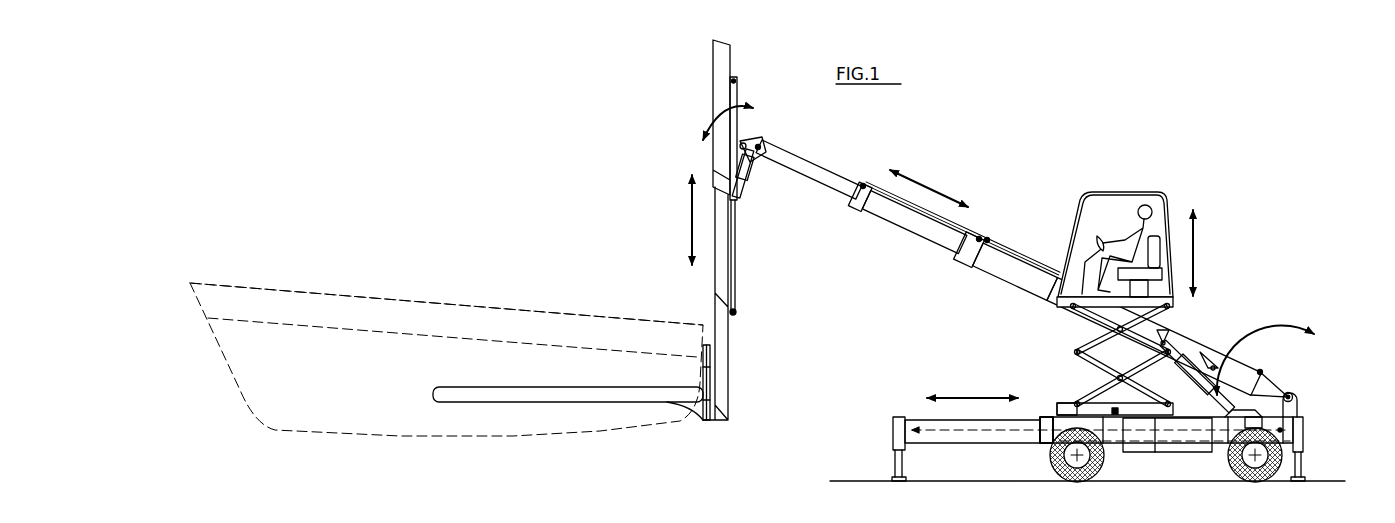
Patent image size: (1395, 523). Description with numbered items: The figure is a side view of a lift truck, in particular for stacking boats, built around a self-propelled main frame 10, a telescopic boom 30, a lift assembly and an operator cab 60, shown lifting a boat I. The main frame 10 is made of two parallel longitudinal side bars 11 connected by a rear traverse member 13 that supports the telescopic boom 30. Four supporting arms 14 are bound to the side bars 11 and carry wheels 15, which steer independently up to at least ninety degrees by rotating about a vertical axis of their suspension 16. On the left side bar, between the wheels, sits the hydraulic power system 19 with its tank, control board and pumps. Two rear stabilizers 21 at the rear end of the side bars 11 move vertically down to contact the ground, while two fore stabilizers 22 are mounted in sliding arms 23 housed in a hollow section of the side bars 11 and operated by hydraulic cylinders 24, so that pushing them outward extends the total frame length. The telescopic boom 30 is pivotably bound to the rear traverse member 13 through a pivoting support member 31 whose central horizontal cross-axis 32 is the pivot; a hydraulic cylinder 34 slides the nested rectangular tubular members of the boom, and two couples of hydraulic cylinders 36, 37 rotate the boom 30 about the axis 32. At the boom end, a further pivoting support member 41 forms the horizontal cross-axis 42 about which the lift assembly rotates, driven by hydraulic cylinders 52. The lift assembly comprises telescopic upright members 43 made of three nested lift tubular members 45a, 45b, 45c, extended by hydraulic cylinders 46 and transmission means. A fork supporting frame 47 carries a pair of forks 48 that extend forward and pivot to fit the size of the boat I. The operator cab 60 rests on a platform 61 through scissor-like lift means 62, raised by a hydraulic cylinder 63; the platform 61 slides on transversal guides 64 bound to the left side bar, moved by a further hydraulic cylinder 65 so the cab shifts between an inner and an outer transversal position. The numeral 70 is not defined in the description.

The boat I is at (417, 312).
The self-propelled main frame 10 is at (1003, 353).
The longitudinal side bars 11 is at (1225, 443).
The rear traverse member 13 is at (1300, 415).
The supporting arms 14 is at (1057, 410).
The wheels 15 is at (1053, 467).
The suspension 16 is at (1040, 440).
The hydraulic power system 19 is at (1188, 448).
The rear stabilizers 21 is at (1305, 468).
The fore stabilizers 22 is at (893, 458).
The sliding arms 23 is at (937, 422).
The hydraulic cylinders 24 is at (965, 432).
The telescopic boom 30 is at (928, 143).
The pivoting support member 31 is at (1297, 405).
The horizontal cross-axis 32 is at (1288, 391).
The hydraulic cylinder 34 is at (1172, 327).
The hydraulic cylinders 36 is at (1212, 387).
The hydraulic cylinders 37 is at (1240, 390).
The further pivoting support member 41 is at (745, 143).
The horizontal cross-axis 42 is at (740, 152).
The telescopic upright members 43 is at (720, 57).
The lift tubular member 45a is at (733, 90).
The lift tubular member 45b is at (717, 273).
The lift tubular member 45c is at (723, 340).
The hydraulic cylinders 46 is at (736, 295).
The fork supporting frame 47 is at (702, 423).
The forks 48 is at (455, 393).
The hydraulic cylinders 52 is at (759, 153).
The operator cab 60 is at (1170, 170).
The platform 61 is at (1067, 405).
The scissor-like lift means 62 is at (1077, 353).
The hydraulic cylinder 63 is at (1140, 376).
The transversal guides 64 is at (1053, 413).
The further hydraulic cylinder 65 is at (1112, 408).
The mast and fork assembly 70 is at (605, 187).